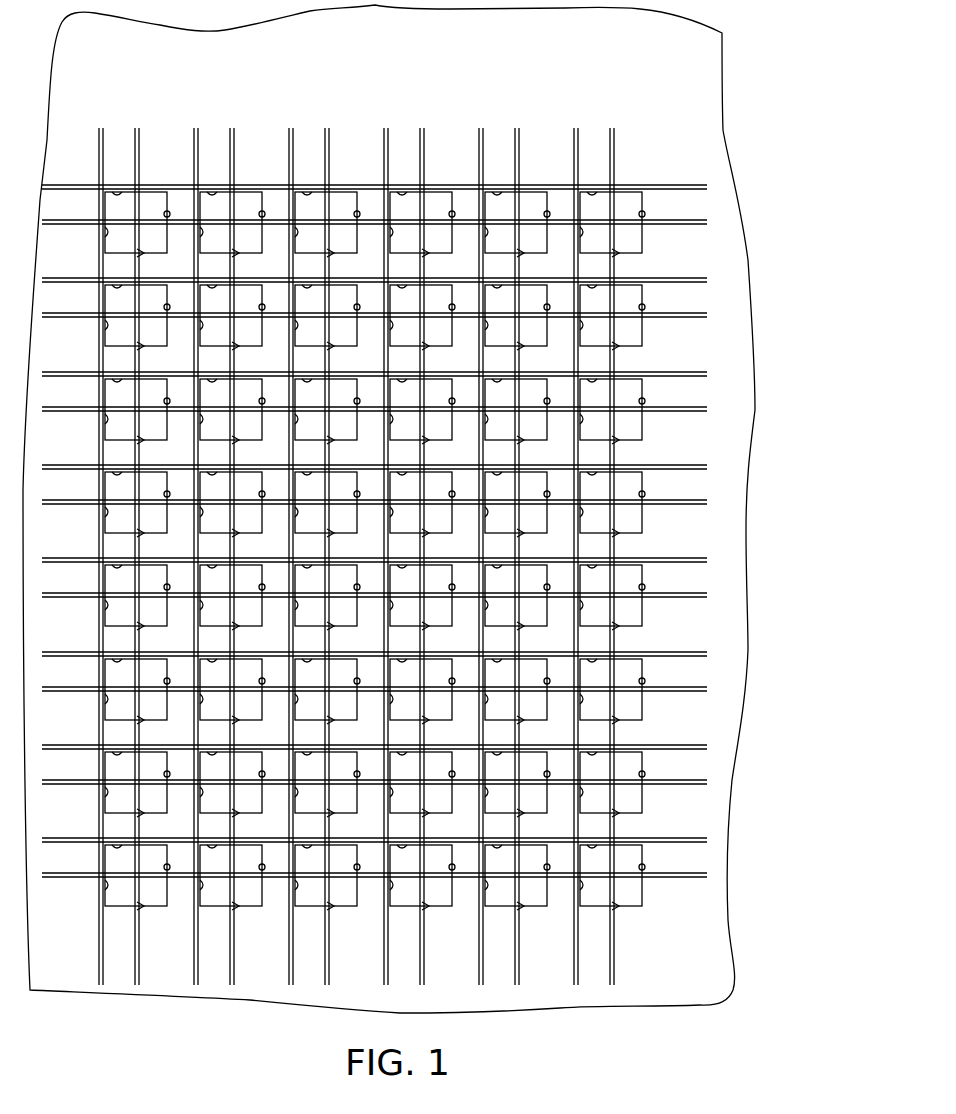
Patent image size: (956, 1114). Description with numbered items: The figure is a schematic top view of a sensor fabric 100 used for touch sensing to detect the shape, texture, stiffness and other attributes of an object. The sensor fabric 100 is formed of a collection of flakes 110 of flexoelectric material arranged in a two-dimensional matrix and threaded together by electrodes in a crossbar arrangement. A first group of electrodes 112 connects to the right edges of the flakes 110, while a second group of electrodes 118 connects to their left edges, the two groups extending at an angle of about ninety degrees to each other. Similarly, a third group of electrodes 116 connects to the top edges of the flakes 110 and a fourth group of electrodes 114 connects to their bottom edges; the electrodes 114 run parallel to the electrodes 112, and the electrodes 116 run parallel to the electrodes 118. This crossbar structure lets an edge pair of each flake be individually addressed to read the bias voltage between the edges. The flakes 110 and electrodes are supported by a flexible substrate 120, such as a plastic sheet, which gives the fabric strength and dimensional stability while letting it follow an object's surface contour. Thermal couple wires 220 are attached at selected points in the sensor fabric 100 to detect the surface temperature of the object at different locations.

The sensor fabric 100 is at (428, 517).
The flake 110 is at (623, 203).
The first group of electrodes 112 is at (576, 128).
The fourth group of electrodes 114 is at (612, 128).
The third group of electrodes 116 is at (708, 374).
The second group of electrodes 118 is at (707, 409).
The substrate 120 is at (562, 992).
The thermal couple wires 220 is at (626, 892).